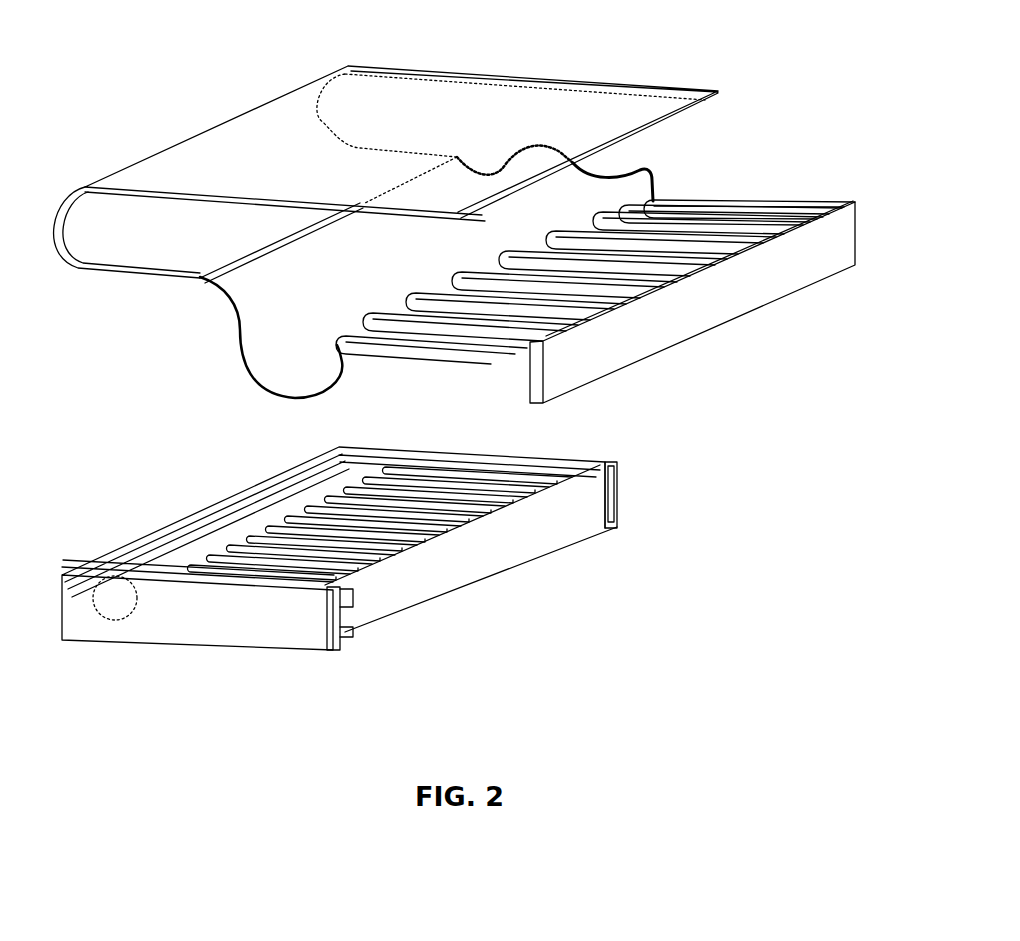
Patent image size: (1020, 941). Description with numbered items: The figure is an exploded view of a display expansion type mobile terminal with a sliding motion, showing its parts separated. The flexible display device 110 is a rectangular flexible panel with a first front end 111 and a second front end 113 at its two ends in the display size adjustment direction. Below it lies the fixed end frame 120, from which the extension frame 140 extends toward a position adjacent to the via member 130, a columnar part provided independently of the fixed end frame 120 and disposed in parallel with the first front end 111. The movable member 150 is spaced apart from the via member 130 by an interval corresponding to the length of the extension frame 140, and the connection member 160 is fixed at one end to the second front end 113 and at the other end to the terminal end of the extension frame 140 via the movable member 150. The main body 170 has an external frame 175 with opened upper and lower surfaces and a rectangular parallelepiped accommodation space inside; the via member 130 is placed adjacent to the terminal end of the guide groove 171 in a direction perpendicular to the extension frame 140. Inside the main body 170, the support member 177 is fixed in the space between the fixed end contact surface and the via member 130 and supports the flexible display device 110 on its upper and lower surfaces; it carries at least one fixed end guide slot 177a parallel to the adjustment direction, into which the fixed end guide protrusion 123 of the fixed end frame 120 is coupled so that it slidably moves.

The flexible display device 110 is at (618, 105).
The first front end 111 is at (720, 107).
The second front end 113 is at (203, 280).
The connection member 160 is at (655, 167).
The fixed end frame 120 is at (743, 290).
The fixed end guide protrusion 123 is at (657, 297).
The extension frame 140 is at (427, 353).
The main body 170 is at (147, 530).
The external frame 175 is at (575, 462).
The support member 177 is at (565, 522).
The fixed end guide slot 177a is at (455, 525).
The guide groove 171 is at (353, 603).
The movable member 150 is at (348, 637).
The via member 130 is at (148, 605).